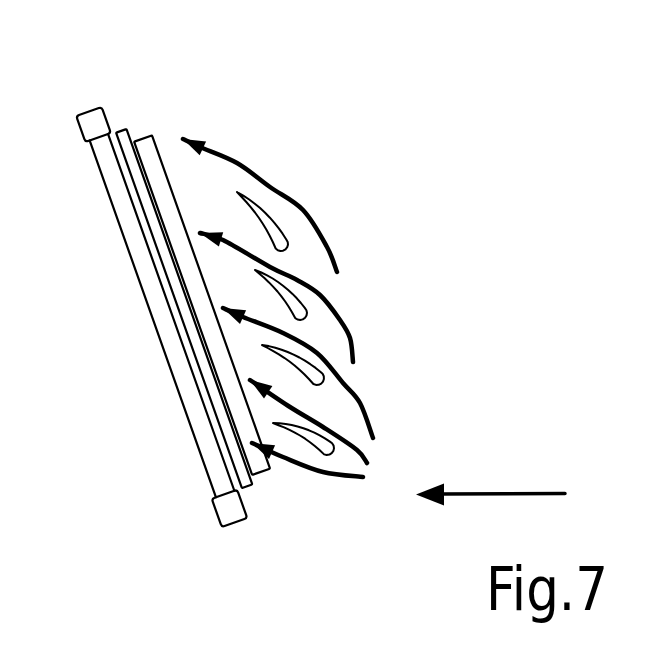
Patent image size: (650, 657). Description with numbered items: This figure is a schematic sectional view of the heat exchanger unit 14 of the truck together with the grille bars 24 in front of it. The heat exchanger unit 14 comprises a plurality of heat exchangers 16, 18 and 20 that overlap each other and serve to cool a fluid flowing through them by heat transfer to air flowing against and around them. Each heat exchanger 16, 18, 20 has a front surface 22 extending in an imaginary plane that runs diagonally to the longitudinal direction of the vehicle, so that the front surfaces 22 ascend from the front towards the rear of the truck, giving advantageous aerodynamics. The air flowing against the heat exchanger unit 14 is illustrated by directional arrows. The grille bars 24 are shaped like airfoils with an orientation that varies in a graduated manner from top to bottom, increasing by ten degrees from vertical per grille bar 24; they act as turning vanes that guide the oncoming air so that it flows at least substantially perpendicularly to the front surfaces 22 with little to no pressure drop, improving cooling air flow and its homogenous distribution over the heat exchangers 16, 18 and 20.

The heat exchanger unit 14 is at (112, 97).
The heat exchanger 16 is at (161, 317).
The heat exchanger 18 is at (184, 308).
The heat exchanger 20 is at (202, 305).
The front surface 22 is at (150, 230).
The grille bar 24 is at (288, 239).